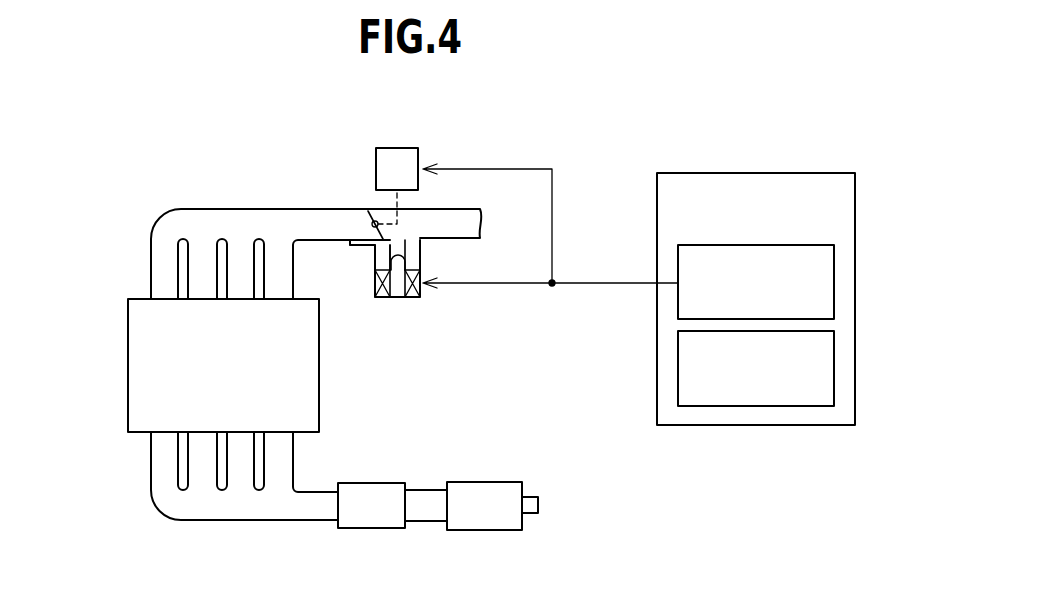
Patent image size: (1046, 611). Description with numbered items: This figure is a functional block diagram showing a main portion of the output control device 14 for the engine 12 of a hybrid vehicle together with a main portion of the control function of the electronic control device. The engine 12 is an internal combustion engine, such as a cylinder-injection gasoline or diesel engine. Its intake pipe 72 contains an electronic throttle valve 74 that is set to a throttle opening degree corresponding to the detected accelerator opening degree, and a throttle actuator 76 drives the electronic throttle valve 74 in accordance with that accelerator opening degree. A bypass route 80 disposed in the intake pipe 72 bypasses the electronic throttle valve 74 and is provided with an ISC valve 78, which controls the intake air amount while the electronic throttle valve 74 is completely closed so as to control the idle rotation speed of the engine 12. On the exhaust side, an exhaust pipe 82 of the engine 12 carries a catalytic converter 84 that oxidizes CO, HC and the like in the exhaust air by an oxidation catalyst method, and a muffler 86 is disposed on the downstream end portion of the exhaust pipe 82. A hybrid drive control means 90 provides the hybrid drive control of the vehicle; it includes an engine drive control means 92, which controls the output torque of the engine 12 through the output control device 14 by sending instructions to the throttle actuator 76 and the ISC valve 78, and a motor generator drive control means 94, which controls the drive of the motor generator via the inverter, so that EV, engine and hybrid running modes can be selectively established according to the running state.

The engine 12 is at (130, 318).
The output control device 14 is at (316, 216).
The intake pipe 72 is at (322, 210).
The electronic throttle valve 74 is at (368, 214).
The throttle actuator 76 is at (396, 148).
The ISC valve 78 is at (397, 297).
The bypass route 80 is at (362, 247).
The exhaust pipe 82 is at (266, 520).
The catalytic converter 84 is at (388, 523).
The muffler 86 is at (500, 485).
The hybrid drive control means 90 is at (773, 285).
The engine drive control means 92 is at (828, 286).
The motor generator drive control means 94 is at (828, 371).